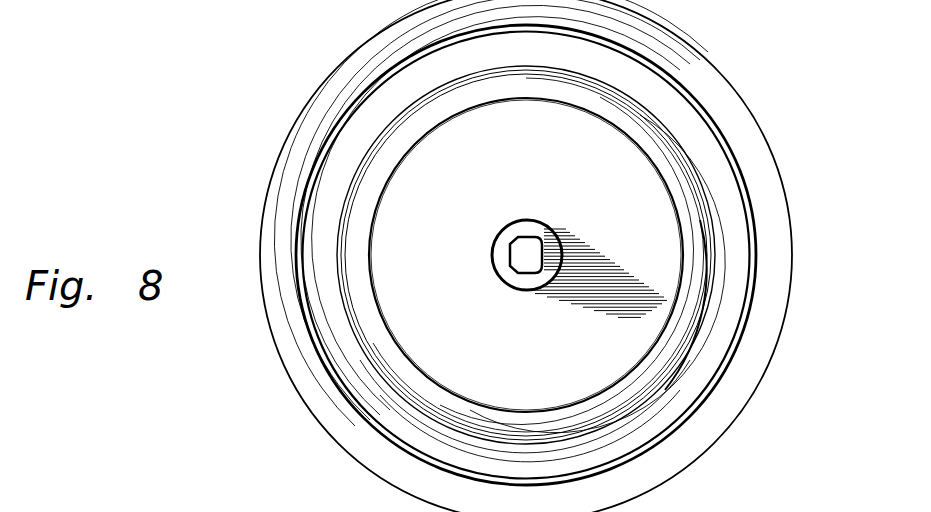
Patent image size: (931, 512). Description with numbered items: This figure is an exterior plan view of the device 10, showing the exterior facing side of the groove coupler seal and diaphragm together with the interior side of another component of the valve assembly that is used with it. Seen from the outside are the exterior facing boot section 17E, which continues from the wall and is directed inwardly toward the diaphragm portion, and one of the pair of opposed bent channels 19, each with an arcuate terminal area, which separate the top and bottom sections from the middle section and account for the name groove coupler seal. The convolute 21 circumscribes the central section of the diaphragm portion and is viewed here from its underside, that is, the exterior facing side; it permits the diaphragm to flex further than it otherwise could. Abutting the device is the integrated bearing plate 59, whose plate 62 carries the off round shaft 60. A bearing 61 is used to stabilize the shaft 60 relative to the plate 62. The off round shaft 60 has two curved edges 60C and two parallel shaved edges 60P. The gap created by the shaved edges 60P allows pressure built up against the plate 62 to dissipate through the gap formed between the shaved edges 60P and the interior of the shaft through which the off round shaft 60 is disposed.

The device 10 is at (226, 130).
The exterior facing boot section 17E is at (733, 155).
The bent channel 19 is at (707, 390).
The convolute section 21 is at (335, 207).
The integrated bearing plate 59 is at (680, 203).
The off round shaft 60 is at (543, 255).
The curved edge 60C is at (525, 235).
The parallel shaved edge 60P is at (510, 250).
The bearing 61 is at (502, 262).
The plate 62 is at (430, 340).